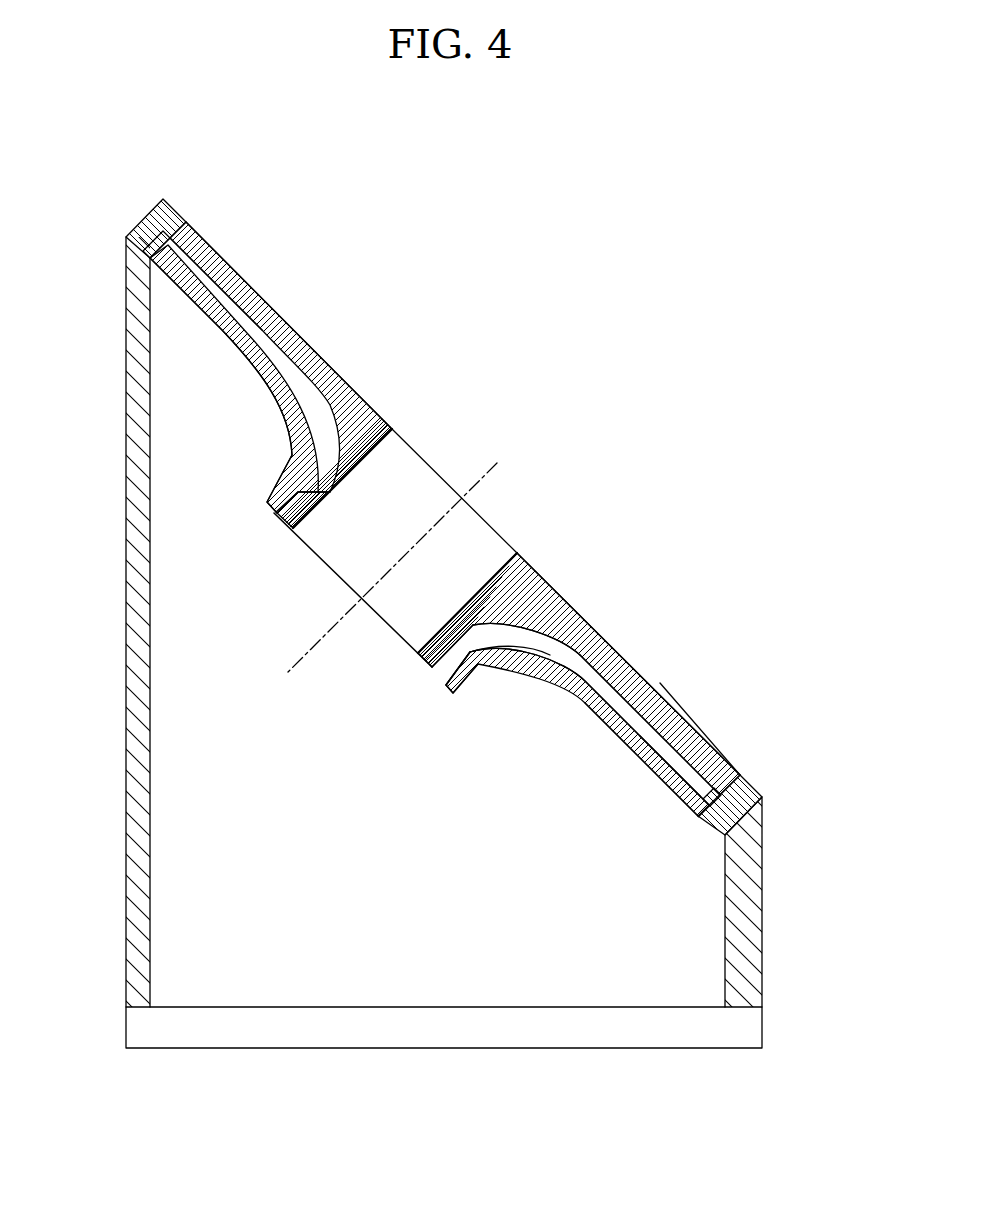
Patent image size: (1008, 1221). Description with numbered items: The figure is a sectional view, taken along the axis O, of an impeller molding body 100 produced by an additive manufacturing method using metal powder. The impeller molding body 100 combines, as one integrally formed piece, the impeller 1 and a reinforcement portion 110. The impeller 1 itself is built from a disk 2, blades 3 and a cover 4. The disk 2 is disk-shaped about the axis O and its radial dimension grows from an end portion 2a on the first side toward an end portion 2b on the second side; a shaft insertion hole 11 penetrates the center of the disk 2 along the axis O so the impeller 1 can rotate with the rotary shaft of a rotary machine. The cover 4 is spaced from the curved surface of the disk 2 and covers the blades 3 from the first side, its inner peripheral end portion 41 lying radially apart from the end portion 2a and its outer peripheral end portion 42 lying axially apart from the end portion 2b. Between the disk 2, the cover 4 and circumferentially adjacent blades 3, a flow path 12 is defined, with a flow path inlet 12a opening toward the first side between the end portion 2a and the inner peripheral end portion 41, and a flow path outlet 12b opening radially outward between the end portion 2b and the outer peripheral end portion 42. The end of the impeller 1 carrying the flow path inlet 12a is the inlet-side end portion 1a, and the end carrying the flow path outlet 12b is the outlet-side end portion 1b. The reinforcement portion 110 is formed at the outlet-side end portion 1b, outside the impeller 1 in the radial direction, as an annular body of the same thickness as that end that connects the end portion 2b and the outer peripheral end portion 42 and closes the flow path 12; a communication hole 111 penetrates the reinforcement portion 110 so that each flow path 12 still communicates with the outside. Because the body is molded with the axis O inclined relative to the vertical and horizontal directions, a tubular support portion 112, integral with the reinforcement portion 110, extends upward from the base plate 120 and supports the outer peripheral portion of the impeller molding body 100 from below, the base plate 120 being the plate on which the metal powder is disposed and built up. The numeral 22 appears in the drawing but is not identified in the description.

The impeller molding body 100 is at (793, 567).
The impeller 1 is at (642, 674).
The inlet-side end portion 1a is at (270, 505).
The outlet-side end portion 1b is at (178, 222).
The disk 2 is at (553, 585).
The end portion 2a is at (472, 630).
The end portion 2b is at (520, 618).
The blades 3 is at (285, 365).
The cover 4 is at (548, 682).
The shaft insertion hole 11 is at (430, 628).
The flow path 12 is at (255, 333).
The flow path inlet 12a is at (456, 688).
The flow path outlet 12b is at (712, 788).
The outer surface 22 is at (688, 758).
The inner peripheral end portion 41 is at (468, 695).
The outer peripheral end portion 42 is at (718, 812).
The reinforcement portion 110 is at (740, 790).
The communication hole 111 is at (152, 228).
The support portion 112 is at (126, 789).
The base plate 120 is at (765, 1027).
The axis O is at (492, 456).